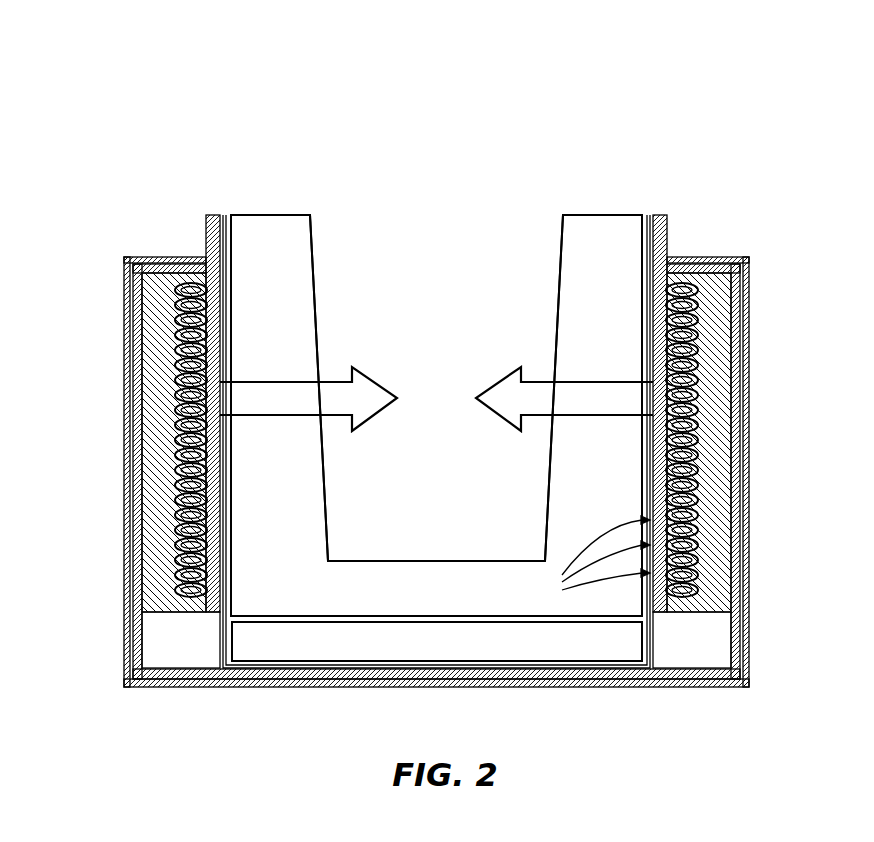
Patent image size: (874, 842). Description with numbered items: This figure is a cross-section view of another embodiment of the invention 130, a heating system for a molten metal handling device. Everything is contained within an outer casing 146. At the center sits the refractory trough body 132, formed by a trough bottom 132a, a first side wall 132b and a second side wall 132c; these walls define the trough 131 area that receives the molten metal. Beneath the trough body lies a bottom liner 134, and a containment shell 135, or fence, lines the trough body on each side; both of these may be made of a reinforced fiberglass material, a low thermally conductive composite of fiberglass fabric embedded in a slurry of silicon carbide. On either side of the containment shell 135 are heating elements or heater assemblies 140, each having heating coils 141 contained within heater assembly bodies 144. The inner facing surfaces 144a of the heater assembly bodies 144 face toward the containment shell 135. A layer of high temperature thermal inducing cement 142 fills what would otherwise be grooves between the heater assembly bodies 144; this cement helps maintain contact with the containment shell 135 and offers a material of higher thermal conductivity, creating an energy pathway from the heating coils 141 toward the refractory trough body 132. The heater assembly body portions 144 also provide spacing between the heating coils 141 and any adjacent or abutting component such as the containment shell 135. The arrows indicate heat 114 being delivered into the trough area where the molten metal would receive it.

The embodiment of the invention 130 is at (486, 142).
The cavity 131 is at (426, 457).
The refractory trough body 132 is at (436, 397).
The trough bottom 132a is at (427, 599).
The first side wall 132b is at (290, 262).
The second side wall 132c is at (578, 250).
The bottom liner 134 is at (560, 643).
The containment shell 135 is at (224, 214).
The heating element or heater assembly 140 is at (148, 489).
The heating coil 141 is at (169, 282).
The high temperature thermal inducing cement 142 is at (220, 352).
The heater assembly body 144 is at (150, 405).
The inner facing surface of the heater assembly body 144a is at (560, 599).
The outer casing 146 is at (124, 271).
The heat 114 is at (502, 373).